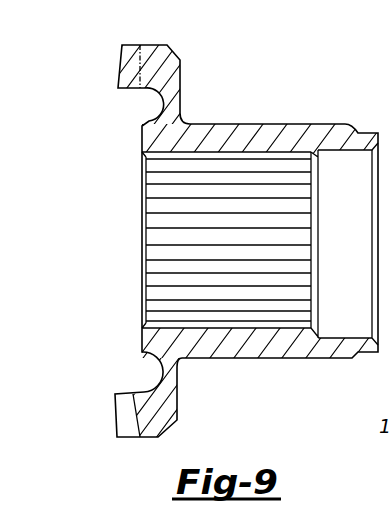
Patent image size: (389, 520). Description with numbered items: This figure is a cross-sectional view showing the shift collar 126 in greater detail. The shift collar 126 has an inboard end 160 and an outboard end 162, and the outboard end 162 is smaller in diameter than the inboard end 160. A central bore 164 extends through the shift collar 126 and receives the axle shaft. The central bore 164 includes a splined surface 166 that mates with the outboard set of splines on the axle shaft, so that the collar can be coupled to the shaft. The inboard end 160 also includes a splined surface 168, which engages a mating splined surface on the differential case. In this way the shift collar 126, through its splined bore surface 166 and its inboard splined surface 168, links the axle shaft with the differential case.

The shift collar 126 is at (66, 153).
The inboard end 160 is at (163, 63).
The outboard end 162 is at (335, 135).
The central bore 164 is at (193, 235).
The splined surface 166 is at (272, 328).
The splined surface 168 is at (128, 420).